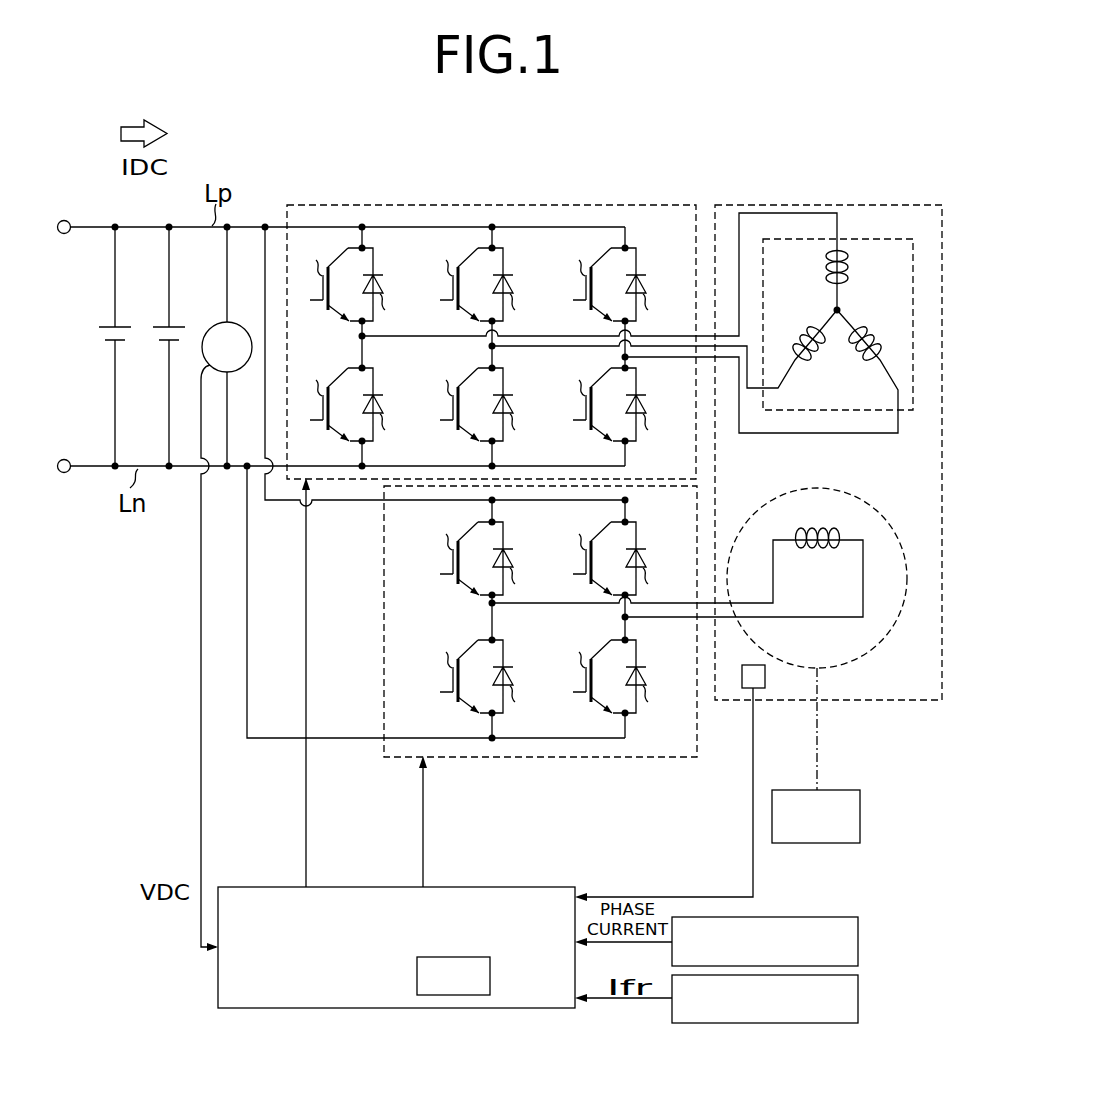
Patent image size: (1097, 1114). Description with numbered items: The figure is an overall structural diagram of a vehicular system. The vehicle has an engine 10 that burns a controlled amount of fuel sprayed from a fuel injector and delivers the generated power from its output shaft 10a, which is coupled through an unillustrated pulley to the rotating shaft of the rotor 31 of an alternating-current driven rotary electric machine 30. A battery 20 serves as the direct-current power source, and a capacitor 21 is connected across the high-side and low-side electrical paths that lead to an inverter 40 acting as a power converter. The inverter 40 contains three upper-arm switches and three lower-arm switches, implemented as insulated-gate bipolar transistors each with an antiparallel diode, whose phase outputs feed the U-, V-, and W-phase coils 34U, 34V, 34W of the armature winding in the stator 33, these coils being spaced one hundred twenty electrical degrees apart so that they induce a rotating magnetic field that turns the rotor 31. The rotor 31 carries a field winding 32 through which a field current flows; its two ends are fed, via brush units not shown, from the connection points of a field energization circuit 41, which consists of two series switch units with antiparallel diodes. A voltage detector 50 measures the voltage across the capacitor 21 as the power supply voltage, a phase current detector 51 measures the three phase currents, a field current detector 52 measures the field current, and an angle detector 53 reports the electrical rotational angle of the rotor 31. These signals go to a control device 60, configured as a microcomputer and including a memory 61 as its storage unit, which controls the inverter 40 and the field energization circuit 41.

The engine 10 is at (861, 800).
The output shaft 10a is at (818, 738).
The battery 20 is at (121, 326).
The capacitor 21 is at (175, 326).
The rotary electric machine 30 is at (863, 205).
The rotor 31 is at (863, 503).
The field winding 32 is at (806, 547).
The stator 33 is at (862, 240).
The U-phase coil 34U is at (848, 258).
The V-phase coil 34V is at (800, 334).
The W-phase coil 34W is at (853, 364).
The inverter 40 is at (618, 205).
The field energization circuit 41 is at (593, 760).
The voltage detector 50 is at (240, 323).
The phase current detector 51 is at (861, 942).
The field current detector 52 is at (861, 998).
The angle detector 53 is at (767, 672).
The control device 60 is at (528, 886).
The memory 61 is at (492, 977).